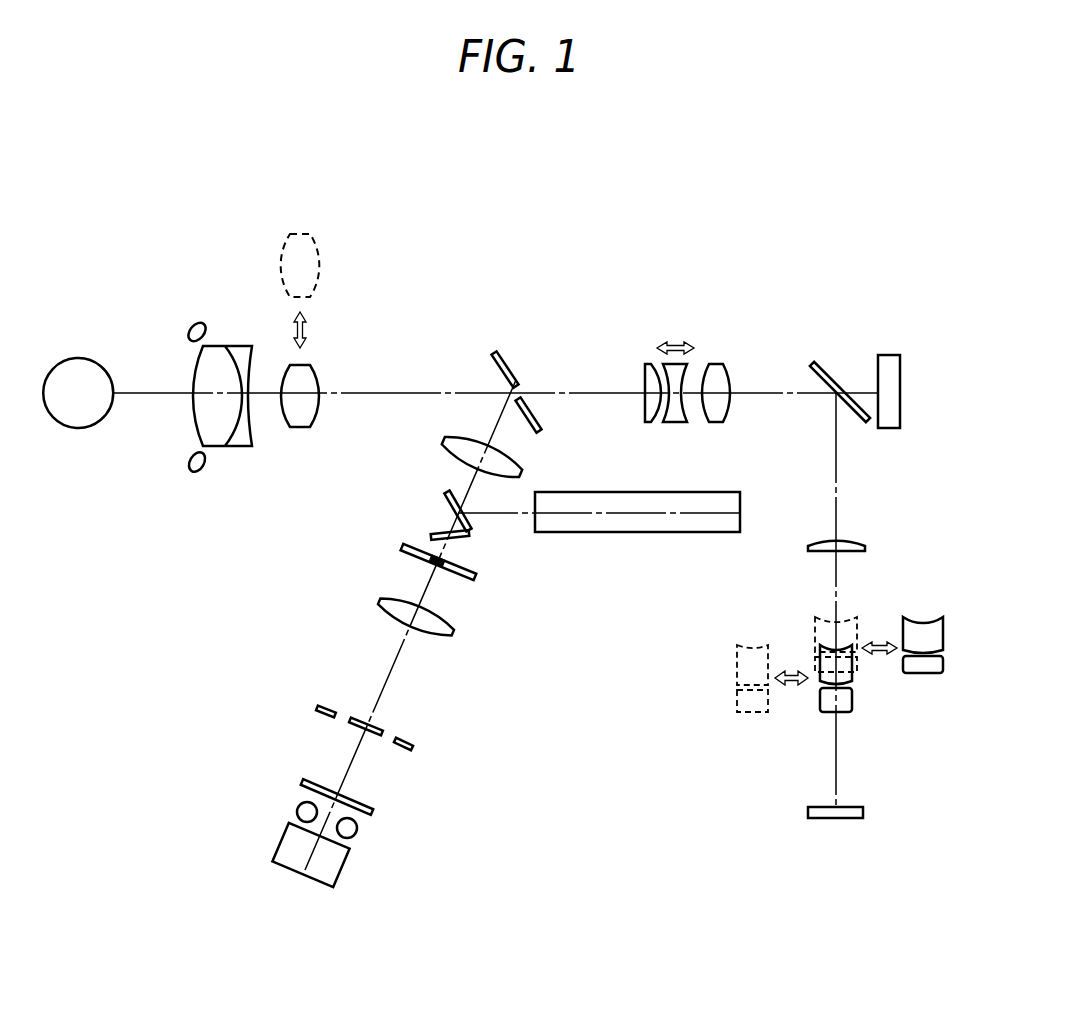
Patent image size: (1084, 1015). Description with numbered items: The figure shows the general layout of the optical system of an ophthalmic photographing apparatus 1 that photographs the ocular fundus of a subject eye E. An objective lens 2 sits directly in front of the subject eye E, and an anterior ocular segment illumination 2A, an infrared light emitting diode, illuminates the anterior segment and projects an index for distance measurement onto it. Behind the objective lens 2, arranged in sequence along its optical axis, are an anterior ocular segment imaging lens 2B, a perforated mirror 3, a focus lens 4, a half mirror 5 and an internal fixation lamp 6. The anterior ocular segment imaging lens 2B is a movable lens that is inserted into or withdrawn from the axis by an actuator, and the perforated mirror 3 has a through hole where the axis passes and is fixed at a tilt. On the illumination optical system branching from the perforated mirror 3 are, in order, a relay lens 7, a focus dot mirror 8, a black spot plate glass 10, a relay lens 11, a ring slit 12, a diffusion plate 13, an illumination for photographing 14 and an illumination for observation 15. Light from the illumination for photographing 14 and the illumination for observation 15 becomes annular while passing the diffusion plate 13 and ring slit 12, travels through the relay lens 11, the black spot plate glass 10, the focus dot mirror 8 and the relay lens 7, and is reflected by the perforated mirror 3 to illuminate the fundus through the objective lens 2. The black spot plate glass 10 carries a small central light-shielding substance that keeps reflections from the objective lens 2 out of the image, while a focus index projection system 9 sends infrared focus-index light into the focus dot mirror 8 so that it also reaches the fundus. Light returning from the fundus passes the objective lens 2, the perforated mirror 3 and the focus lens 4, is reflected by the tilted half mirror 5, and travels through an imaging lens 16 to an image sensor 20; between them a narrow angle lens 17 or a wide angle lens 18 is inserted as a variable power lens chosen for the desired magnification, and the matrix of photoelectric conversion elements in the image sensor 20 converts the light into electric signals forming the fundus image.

The ophthalmic photographing apparatus 1 is at (865, 285).
The subject eye E is at (97, 367).
The objective lens 2 is at (250, 346).
The anterior ocular segment illumination 2A is at (193, 325).
The anterior ocular segment imaging lens 2B is at (310, 367).
The perforated mirror 3 is at (492, 352).
The focus lens 4 is at (740, 346).
The half mirror 5 is at (823, 367).
The internal fixation lamp 6 is at (902, 358).
The relay lens 7 is at (525, 463).
The focus dot mirror 8 is at (447, 497).
The focus index projection system 9 is at (740, 493).
The black spot plate glass 10 is at (475, 574).
The relay lens 11 is at (455, 623).
The ring slit 12 is at (413, 747).
The diffusion plate 13 is at (373, 810).
The illumination for photographing 14 is at (298, 806).
The illumination for observation 15 is at (285, 832).
The imaging lens 16 is at (867, 544).
The narrow angle lens 17 is at (848, 617).
The wide angle lens 18 is at (820, 698).
The image sensor 20 is at (865, 807).